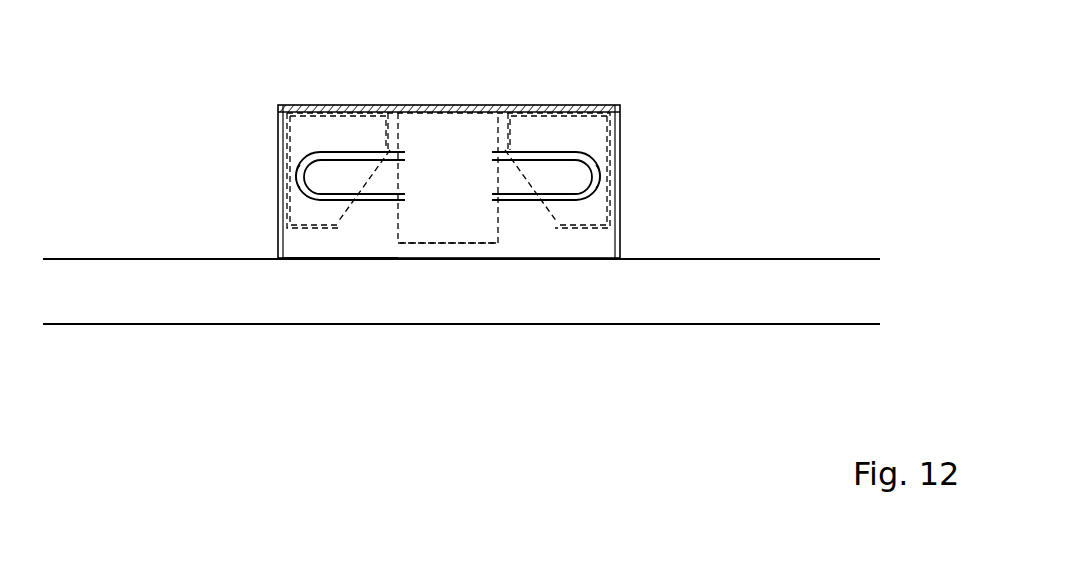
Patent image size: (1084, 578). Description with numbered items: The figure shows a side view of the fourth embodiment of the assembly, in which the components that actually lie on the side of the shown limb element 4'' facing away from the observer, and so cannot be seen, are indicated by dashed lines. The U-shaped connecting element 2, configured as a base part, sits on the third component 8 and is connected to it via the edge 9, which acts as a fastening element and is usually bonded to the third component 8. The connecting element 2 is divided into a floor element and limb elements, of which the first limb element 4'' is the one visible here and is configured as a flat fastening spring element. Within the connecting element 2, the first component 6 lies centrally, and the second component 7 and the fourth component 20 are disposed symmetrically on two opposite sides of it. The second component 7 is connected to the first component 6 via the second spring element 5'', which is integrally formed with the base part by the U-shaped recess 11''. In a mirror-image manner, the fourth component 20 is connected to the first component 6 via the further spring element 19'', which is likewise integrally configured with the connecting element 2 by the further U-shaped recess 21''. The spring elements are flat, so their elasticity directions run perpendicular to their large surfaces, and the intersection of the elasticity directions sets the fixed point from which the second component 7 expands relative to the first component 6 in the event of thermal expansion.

The connecting element 2 is at (536, 104).
The first limb element 4'' is at (313, 341).
The second spring element 5'' is at (616, 182).
The first component 6 is at (447, 137).
The second component 7 is at (585, 132).
The third component 8 is at (796, 283).
The edge 9 is at (447, 258).
The second U-shaped recess 11'' is at (676, 200).
The second further spring element 19'' is at (253, 177).
The fourth component 20 is at (308, 132).
The second further U-shaped recess 21'' is at (215, 189).